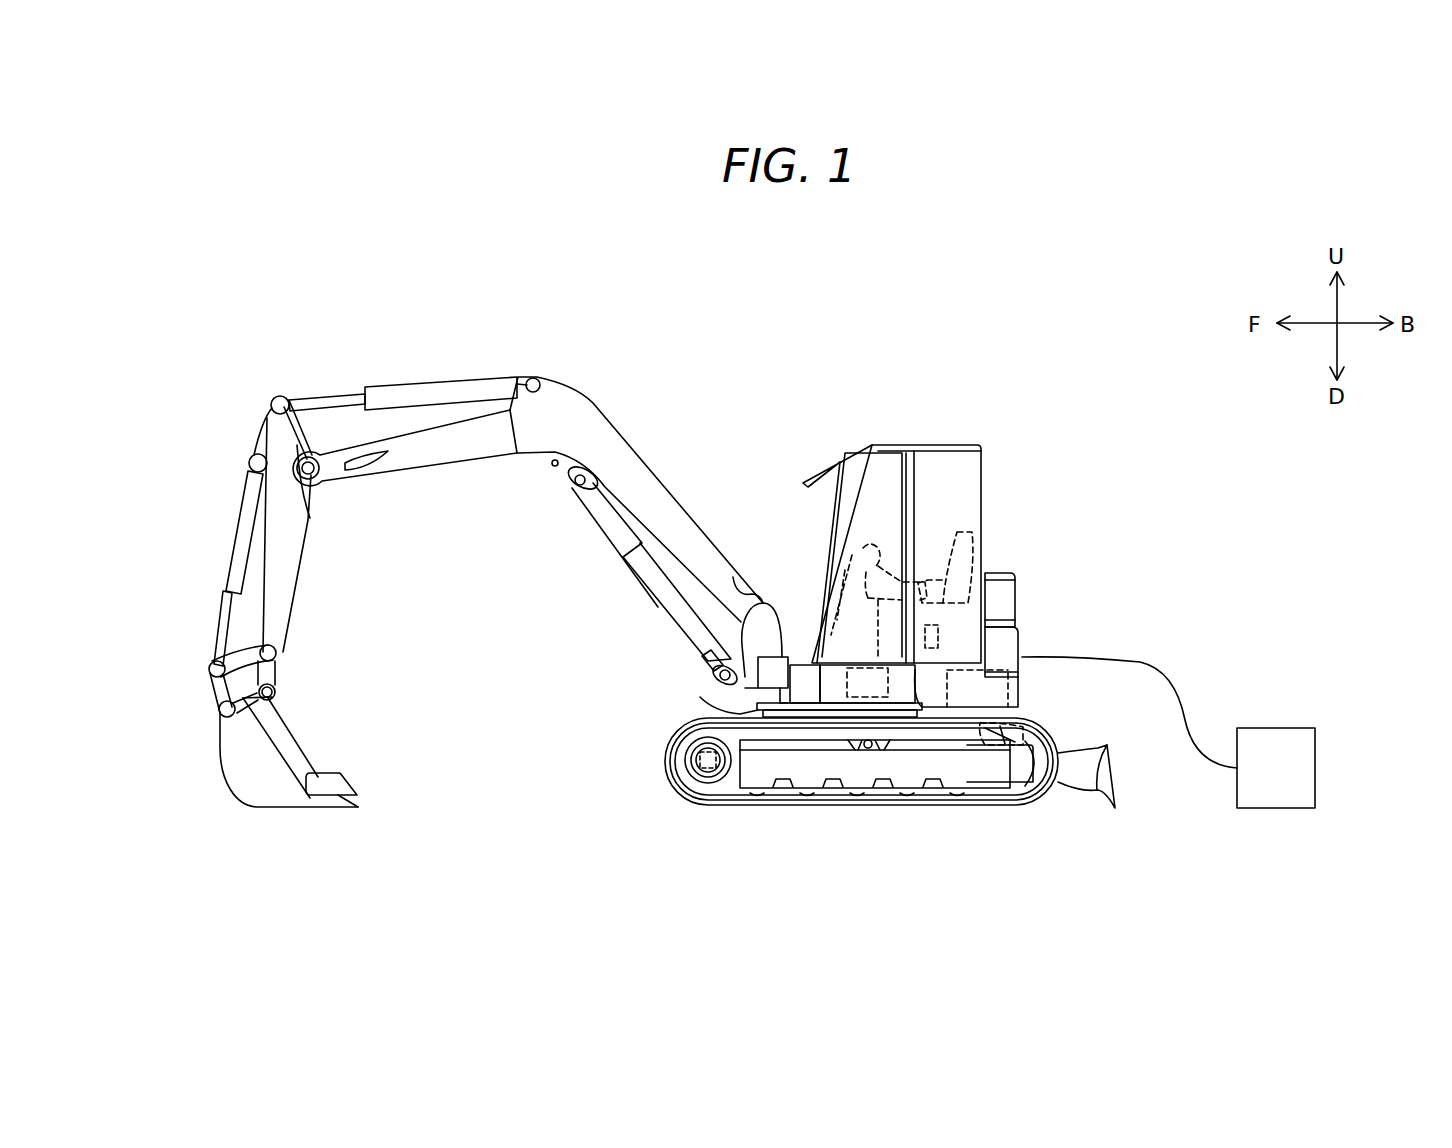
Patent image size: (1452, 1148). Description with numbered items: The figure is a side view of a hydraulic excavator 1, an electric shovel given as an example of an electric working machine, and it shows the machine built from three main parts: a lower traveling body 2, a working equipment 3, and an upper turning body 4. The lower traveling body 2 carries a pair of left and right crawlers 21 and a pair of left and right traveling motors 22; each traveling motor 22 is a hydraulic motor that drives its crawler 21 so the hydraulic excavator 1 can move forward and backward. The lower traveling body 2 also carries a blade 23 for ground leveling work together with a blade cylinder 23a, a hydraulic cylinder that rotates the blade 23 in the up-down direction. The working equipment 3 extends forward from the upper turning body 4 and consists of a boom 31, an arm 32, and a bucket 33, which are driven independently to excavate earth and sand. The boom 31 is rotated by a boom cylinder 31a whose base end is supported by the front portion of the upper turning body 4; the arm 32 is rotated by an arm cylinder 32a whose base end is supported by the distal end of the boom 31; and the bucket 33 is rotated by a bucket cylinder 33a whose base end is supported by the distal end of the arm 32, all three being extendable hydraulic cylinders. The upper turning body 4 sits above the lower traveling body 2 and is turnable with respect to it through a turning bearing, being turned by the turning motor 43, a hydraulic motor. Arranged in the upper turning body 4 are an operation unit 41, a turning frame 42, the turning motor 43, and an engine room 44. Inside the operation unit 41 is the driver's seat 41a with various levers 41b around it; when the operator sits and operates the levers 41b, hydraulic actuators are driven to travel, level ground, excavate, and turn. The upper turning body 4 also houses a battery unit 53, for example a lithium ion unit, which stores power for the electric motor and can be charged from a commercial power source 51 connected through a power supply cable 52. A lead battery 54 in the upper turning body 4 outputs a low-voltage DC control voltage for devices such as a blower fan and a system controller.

The hydraulic excavator 1 is at (942, 337).
The lower traveling body 2 is at (655, 737).
The crawlers 21 is at (665, 758).
The traveling motors 22 is at (708, 785).
The blade 23 is at (1108, 747).
The blade cylinder 23a is at (1000, 722).
The working equipment 3 is at (424, 541).
The boom 31 is at (467, 455).
The boom cylinder 31a is at (675, 616).
The arm 32 is at (292, 578).
The arm cylinder 32a is at (438, 385).
The bucket 33 is at (232, 778).
The bucket cylinder 33a is at (243, 529).
The upper turning body 4 is at (1055, 468).
The operation unit 41 is at (901, 440).
The driver's seat 41a is at (972, 536).
The levers 41b is at (851, 539).
The turning frame 42 is at (745, 707).
The turning motor 43 is at (848, 695).
The engine room 44 is at (1015, 580).
The commercial power source 51 is at (1322, 745).
The power supply cable 52 is at (1165, 666).
The battery unit 53 is at (998, 665).
The lead battery 54 is at (940, 636).